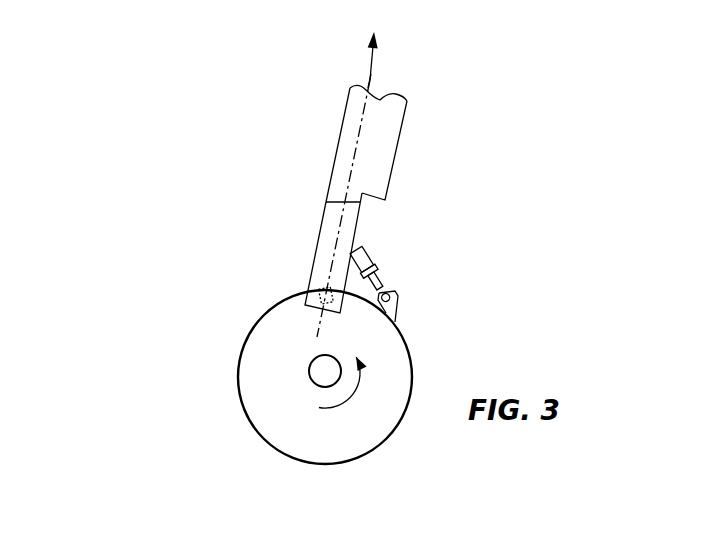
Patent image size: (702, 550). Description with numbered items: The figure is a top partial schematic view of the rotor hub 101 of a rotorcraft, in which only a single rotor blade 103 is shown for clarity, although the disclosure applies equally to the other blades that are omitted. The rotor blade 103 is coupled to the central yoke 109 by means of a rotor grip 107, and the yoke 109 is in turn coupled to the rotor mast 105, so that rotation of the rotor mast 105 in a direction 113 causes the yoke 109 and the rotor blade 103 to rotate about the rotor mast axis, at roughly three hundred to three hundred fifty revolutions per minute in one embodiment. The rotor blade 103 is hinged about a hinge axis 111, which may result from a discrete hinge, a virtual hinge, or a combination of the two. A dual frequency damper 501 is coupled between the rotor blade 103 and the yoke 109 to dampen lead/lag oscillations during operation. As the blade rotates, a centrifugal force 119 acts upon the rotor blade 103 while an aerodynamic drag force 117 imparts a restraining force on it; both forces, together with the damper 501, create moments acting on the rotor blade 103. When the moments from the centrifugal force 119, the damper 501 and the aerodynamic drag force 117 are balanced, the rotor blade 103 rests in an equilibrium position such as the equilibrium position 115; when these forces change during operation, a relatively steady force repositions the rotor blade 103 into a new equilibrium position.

The rotor hub 101 is at (192, 178).
The rotor blade 103 is at (398, 148).
The rotor mast 105 is at (311, 380).
The rotor grip 107 is at (316, 250).
The yoke 109 is at (404, 333).
The hinge axis 111 is at (317, 292).
The direction 113 is at (352, 396).
The equilibrium position 115 is at (375, 78).
The aerodynamic drag force 117 is at (314, 121).
The centrifugal force 119 is at (369, 68).
The dual frequency damper 501 is at (393, 256).